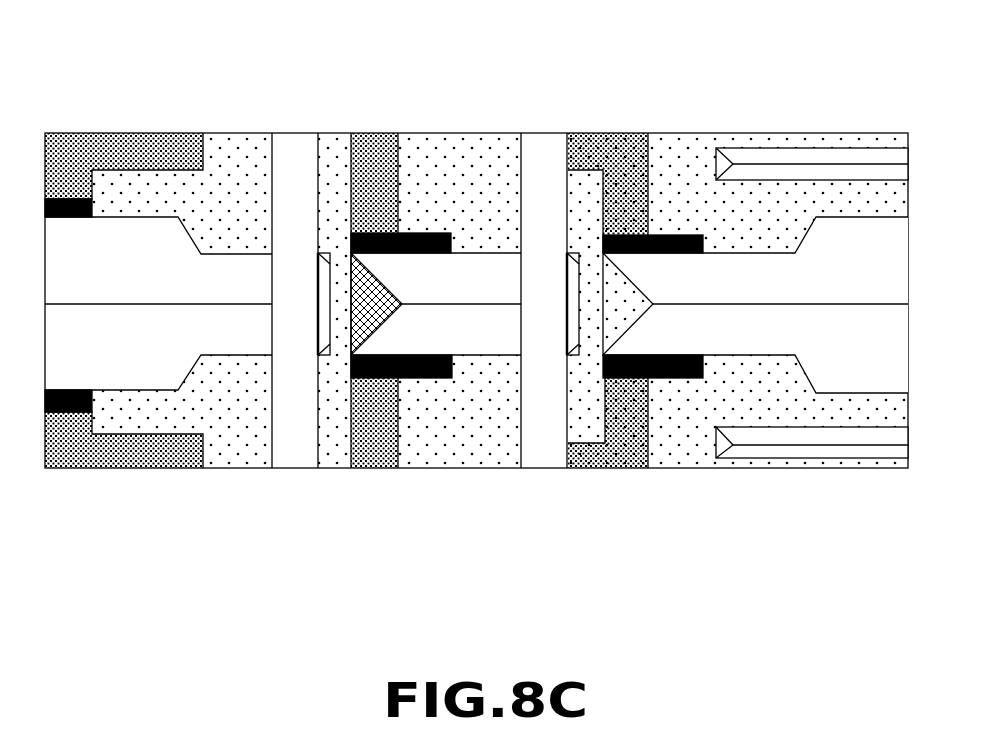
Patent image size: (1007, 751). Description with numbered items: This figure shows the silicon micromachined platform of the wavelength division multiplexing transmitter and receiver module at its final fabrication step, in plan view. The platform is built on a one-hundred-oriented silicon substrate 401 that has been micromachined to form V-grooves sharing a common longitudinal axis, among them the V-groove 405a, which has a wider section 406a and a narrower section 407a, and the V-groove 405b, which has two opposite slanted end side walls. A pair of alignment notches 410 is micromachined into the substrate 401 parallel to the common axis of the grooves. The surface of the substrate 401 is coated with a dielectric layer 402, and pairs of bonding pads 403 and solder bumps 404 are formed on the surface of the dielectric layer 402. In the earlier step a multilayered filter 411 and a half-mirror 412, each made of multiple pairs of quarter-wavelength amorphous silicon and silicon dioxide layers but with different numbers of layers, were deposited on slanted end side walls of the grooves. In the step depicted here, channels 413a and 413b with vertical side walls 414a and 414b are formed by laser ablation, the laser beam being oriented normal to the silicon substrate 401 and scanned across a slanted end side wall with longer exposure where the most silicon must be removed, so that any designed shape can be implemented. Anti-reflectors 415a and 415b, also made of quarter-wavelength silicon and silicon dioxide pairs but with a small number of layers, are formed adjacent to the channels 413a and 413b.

The silicon substrate 401 is at (349, 262).
The dielectric layer 402 is at (436, 452).
The bonding pads 403 is at (602, 244).
The solder bumps 404 is at (655, 217).
The V-groove 405a is at (158, 440).
The V-groove 405b is at (436, 162).
The wider section 406a is at (158, 162).
The narrower section 407a is at (158, 165).
The alignment notches 410 is at (812, 239).
The multilayered filter 411 is at (755, 401).
The half-mirror 412 is at (365, 419).
The channel 413a is at (275, 244).
The channel 413b is at (527, 359).
The vertical side wall 414a is at (265, 359).
The vertical side wall 414b is at (731, 341).
The anti-reflector 415a is at (290, 401).
The anti-reflector 415b is at (523, 206).